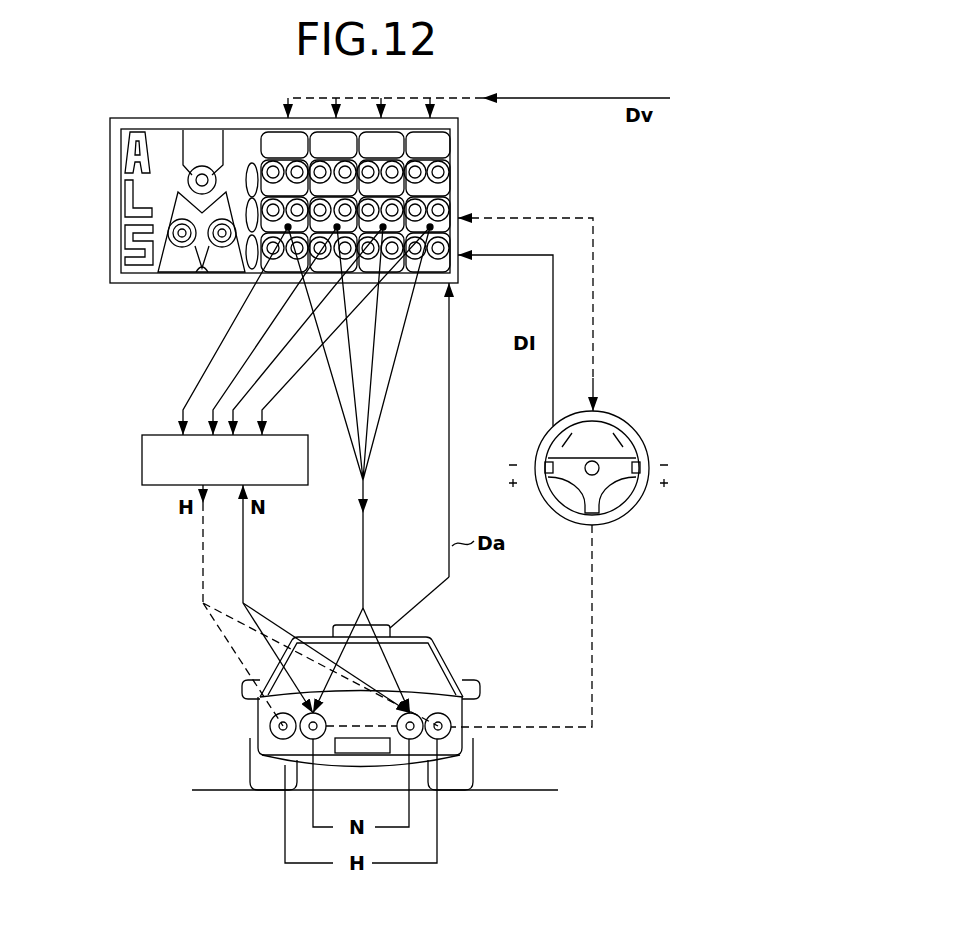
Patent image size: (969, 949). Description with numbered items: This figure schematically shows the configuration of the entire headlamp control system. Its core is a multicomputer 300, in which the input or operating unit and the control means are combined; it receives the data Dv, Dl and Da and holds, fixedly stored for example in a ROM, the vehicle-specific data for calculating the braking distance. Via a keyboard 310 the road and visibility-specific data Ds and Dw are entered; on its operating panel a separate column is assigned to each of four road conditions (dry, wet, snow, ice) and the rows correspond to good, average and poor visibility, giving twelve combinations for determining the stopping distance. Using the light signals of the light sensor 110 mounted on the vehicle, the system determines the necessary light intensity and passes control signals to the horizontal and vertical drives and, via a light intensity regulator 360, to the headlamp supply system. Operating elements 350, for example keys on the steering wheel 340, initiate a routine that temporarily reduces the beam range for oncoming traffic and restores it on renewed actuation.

The light sensor 110 is at (386, 625).
The multicomputer 300 is at (110, 152).
The keyboard 310 is at (172, 97).
The steering wheel 340 is at (640, 437).
The operating elements 350 is at (546, 464).
The light intensity regulator 360 is at (172, 472).